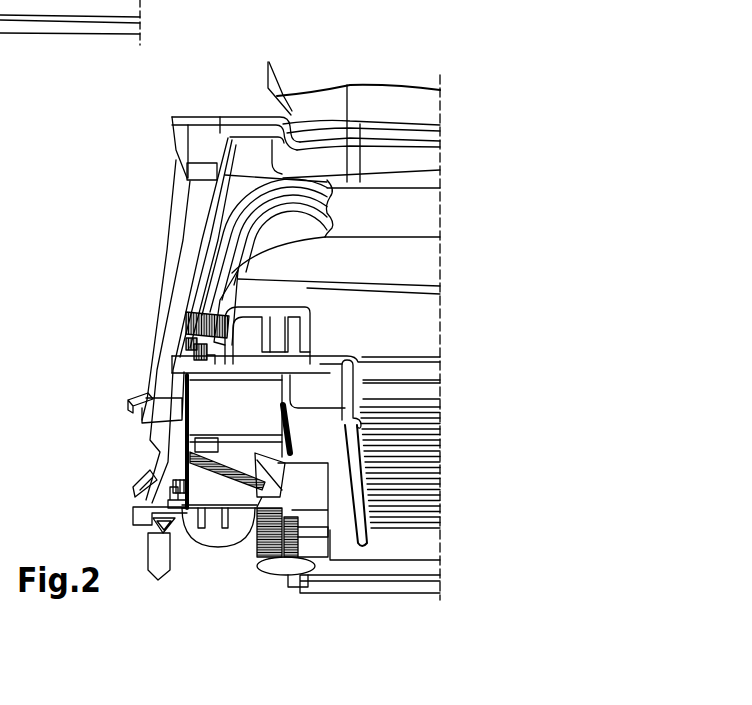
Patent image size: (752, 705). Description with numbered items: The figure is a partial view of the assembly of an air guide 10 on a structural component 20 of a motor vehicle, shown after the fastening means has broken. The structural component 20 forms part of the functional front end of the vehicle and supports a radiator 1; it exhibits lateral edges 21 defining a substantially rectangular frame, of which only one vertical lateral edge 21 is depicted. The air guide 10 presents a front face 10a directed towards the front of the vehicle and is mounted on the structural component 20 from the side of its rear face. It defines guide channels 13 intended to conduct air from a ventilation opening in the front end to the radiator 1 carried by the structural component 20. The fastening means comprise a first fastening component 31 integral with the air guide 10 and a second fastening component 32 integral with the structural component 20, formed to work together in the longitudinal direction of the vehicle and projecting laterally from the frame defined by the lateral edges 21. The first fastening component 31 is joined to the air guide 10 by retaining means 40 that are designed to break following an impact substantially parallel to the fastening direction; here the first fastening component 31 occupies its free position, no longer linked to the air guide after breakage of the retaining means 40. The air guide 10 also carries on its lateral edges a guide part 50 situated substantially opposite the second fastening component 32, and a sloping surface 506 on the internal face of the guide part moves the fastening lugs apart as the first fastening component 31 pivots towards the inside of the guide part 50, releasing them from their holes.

The radiator 1 is at (420, 392).
The air guide 10 is at (447, 202).
The front face 10a is at (250, 117).
The guide channel 13 is at (347, 78).
The structural component 20 is at (190, 556).
The lateral edge 21 is at (237, 417).
The first fastening component 31 is at (186, 320).
The second fastening component 32 is at (178, 339).
The retaining means 40 is at (140, 406).
The guide part 50 is at (160, 452).
The sloping surface 506 is at (160, 385).